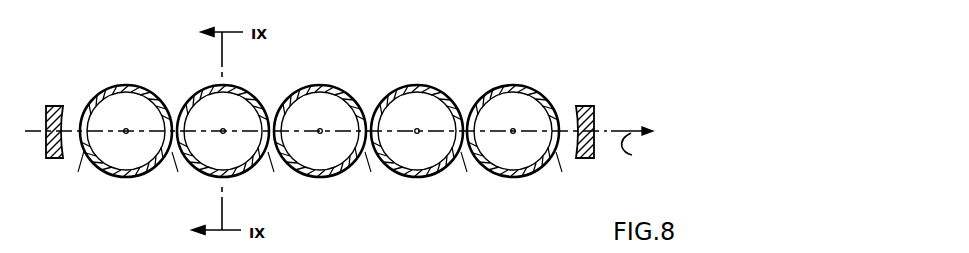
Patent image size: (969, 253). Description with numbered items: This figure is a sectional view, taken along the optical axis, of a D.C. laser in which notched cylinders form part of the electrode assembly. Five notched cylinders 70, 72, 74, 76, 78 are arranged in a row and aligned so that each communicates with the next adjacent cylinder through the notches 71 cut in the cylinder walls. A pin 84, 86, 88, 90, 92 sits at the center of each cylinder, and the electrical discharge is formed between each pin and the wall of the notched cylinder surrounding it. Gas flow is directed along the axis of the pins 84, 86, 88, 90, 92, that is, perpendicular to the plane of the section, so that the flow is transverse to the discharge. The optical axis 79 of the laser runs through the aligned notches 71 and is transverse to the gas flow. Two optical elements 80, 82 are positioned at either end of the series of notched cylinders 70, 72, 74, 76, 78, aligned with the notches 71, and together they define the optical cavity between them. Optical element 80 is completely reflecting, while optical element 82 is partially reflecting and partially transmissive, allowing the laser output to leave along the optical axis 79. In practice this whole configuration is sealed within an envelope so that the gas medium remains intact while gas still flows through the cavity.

The notched cylinder 70 is at (139, 86).
The notched cylinder 72 is at (238, 86).
The notched cylinder 74 is at (337, 86).
The notched cylinder 76 is at (434, 86).
The notched cylinder 78 is at (528, 86).
The notch 71 is at (78, 172).
The optical element 80 is at (62, 106).
The optical element 82 is at (585, 106).
The optical axis 79 is at (635, 146).
The pin 84 is at (124, 134).
The pin 86 is at (222, 134).
The pin 88 is at (318, 134).
The pin 90 is at (416, 134).
The pin 92 is at (512, 134).